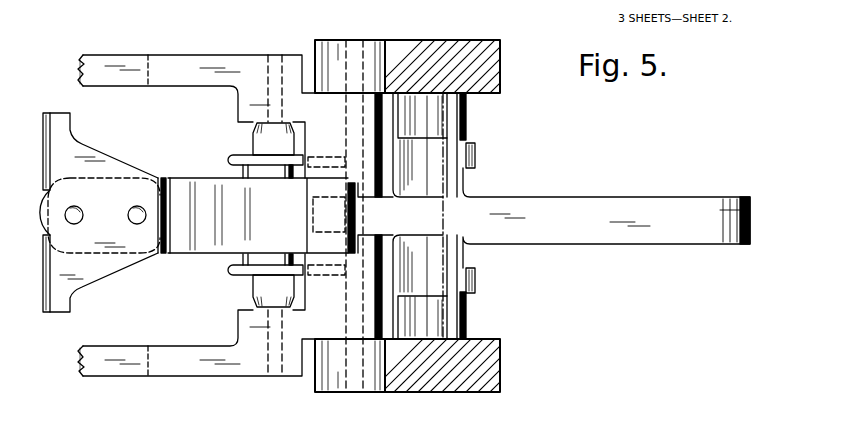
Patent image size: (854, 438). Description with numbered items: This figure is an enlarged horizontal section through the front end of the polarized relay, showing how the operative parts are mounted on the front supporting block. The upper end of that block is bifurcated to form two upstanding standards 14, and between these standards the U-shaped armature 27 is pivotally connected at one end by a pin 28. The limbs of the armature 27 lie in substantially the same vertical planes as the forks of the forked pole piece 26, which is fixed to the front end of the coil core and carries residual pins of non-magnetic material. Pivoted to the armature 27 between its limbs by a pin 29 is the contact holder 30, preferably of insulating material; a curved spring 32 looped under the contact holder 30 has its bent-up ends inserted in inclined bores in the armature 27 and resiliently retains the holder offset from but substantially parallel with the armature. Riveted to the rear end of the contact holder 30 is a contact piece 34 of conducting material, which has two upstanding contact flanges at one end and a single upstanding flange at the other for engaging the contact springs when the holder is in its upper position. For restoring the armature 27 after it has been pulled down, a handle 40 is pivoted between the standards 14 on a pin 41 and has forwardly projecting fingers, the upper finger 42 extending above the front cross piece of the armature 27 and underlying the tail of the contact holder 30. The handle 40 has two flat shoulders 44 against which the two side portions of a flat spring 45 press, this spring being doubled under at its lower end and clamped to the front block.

The standards 14 is at (486, 44).
The forked pole piece 26 is at (80, 86).
The armature 27 is at (196, 215).
The pin 28 is at (366, 52).
The pin 29 is at (268, 66).
The contact holder 30 is at (196, 246).
The curved spring 32 is at (231, 156).
The contact piece 34 is at (133, 268).
The handle 40 is at (606, 218).
The pin 41 is at (413, 130).
The upper finger 42 is at (405, 210).
The flat shoulders 44 is at (456, 268).
The flat spring 45 is at (477, 155).